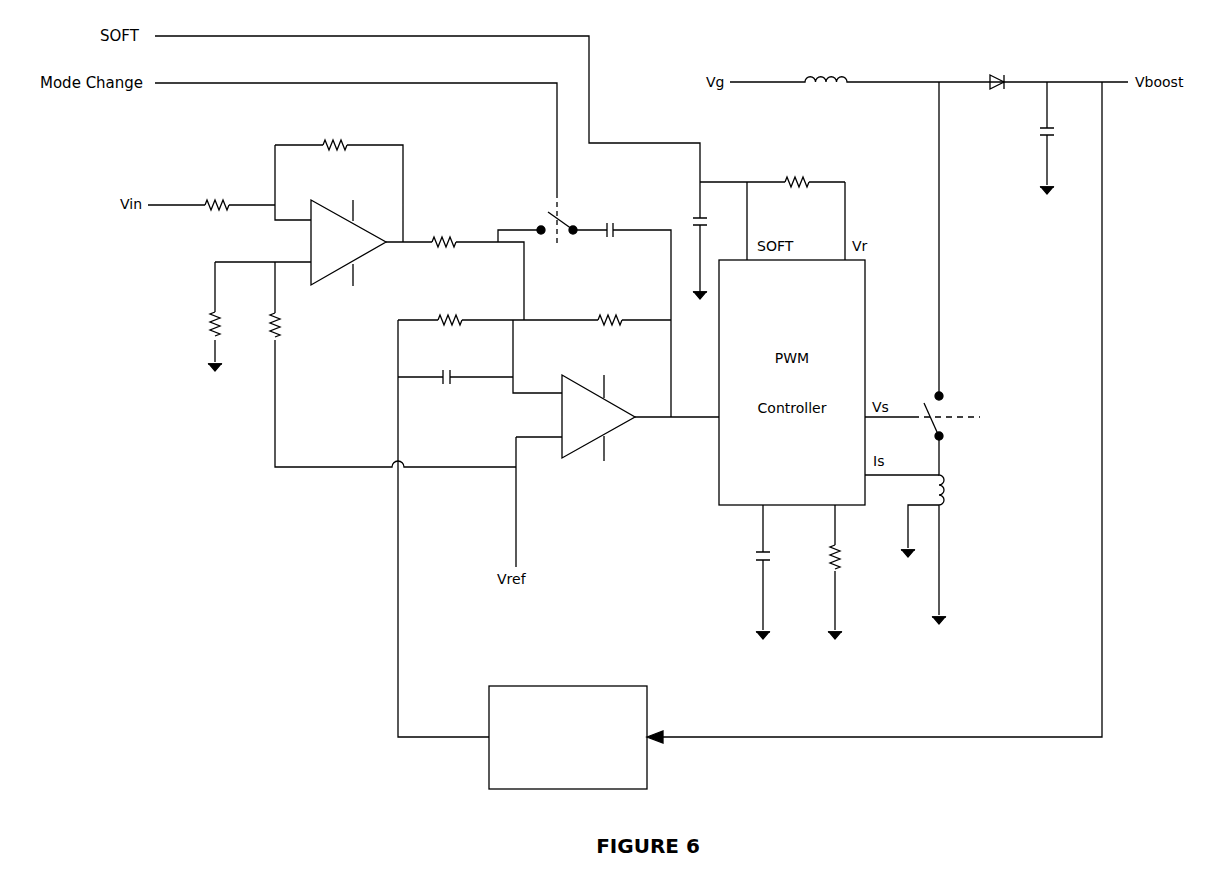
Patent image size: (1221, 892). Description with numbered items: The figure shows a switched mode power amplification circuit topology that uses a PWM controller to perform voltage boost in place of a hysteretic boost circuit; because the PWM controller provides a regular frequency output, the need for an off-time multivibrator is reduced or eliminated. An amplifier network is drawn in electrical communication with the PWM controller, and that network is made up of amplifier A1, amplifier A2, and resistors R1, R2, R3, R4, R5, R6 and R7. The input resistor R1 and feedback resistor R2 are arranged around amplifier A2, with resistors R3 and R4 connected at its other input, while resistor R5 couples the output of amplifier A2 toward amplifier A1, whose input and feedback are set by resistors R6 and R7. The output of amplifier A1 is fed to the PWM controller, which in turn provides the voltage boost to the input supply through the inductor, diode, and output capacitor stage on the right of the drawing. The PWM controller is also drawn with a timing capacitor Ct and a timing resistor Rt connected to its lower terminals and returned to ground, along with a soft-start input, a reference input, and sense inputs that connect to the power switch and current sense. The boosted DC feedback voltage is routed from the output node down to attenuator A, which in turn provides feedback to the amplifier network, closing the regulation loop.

The resistor R1 is at (217, 190).
The resistor R2 is at (336, 131).
The resistor R3 is at (200, 326).
The resistor R4 is at (289, 326).
The resistor R5 is at (444, 230).
The resistor R6 is at (450, 310).
The resistor R7 is at (611, 309).
The amplifier A1 is at (598, 418).
The amplifier A2 is at (348, 243).
The timing capacitor Ct is at (750, 572).
The timing resistor Rt is at (847, 572).
The attenuator A is at (568, 737).